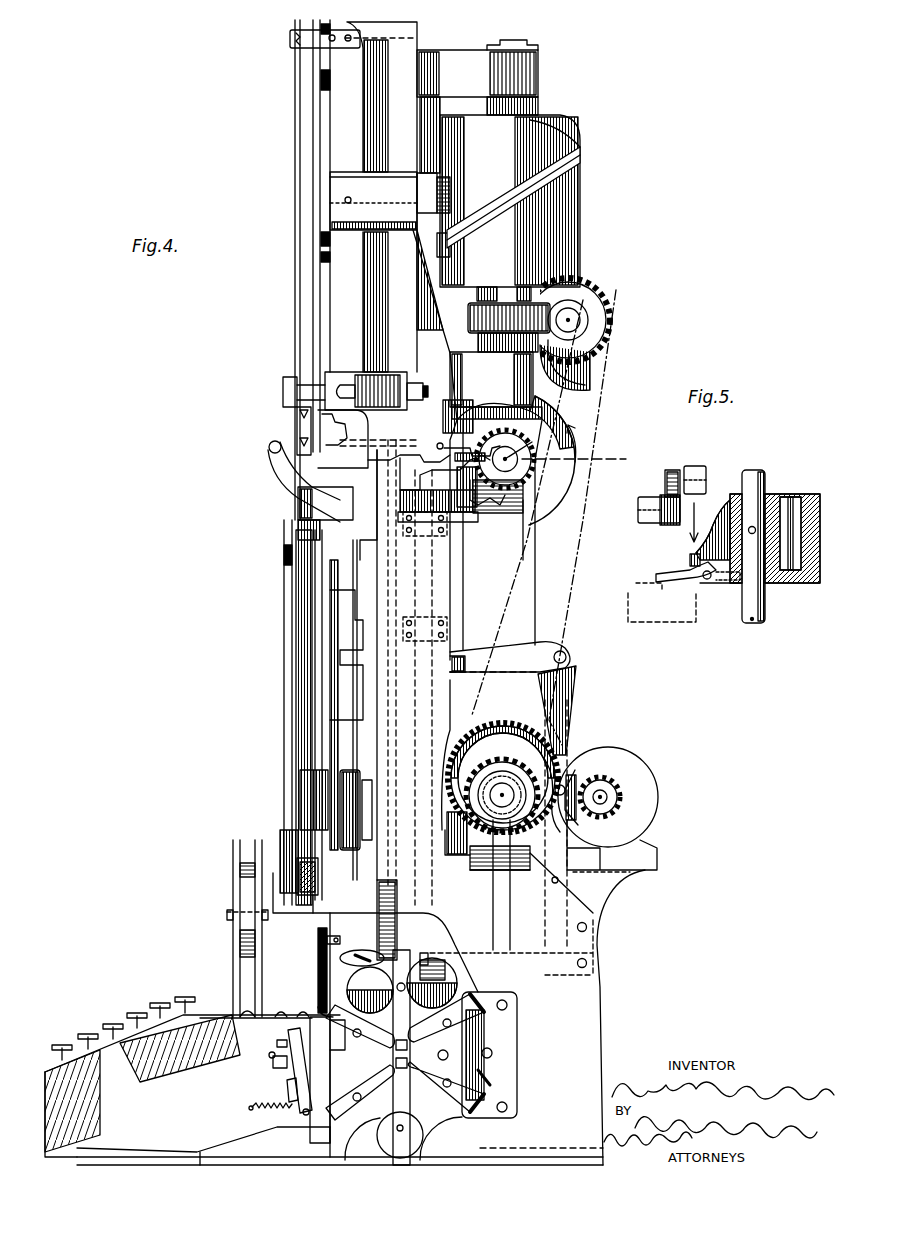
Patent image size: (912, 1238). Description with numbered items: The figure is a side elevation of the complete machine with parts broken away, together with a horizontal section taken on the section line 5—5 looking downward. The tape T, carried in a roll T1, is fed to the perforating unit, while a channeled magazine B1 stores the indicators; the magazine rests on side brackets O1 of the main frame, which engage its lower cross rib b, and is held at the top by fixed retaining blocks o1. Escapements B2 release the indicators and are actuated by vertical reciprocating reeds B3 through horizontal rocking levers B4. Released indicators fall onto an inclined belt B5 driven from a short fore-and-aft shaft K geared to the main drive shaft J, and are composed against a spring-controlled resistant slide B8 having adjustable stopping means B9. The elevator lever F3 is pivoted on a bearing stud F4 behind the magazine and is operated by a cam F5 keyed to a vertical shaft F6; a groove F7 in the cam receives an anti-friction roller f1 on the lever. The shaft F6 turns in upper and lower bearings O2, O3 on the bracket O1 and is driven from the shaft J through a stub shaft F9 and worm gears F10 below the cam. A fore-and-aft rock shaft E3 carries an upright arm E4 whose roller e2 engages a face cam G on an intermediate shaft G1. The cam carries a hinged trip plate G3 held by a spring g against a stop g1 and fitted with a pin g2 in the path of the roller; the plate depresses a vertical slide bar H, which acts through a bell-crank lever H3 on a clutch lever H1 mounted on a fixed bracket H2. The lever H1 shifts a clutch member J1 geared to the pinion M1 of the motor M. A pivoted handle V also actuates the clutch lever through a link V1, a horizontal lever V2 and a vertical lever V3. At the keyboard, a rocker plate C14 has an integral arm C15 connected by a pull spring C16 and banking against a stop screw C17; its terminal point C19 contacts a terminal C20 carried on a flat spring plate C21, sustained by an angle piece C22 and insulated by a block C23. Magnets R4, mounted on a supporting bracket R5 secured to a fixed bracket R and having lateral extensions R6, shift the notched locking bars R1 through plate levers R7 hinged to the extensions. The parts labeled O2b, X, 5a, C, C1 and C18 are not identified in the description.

In FIG. 4, the channeled magazine B1 is at (297, 268).
In FIG. 4, the fixed retaining blocks o1 is at (292, 36).
In FIG. 4, the side brackets O1 is at (412, 48).
In FIG. 4, the long lever F3 is at (418, 240).
In FIG. 4, the bearing stud F4 is at (448, 200).
In FIG. 4, the anti-friction roller f1 is at (449, 250).
In FIG. 4, the upper bearing O2 is at (477, 73).
In FIG. 4, the frame block lower O2b is at (284, 388).
In FIG. 4, the vertical shaft F6 is at (522, 45).
In FIG. 4, the cam F5 is at (510, 208).
In FIG. 4, the groove F7 is at (498, 220).
In FIG. 4, the worm gears F10 is at (468, 316).
In FIG. 4, the stub shaft F9 is at (592, 305).
In FIG. 4, the lower bearing O3 is at (496, 385).
In FIG. 4, the lower cross rib b is at (322, 383).
In FIG. 4, the latch X is at (296, 425).
In FIG. 4, the horizontal rocking levers B4 is at (362, 455).
In FIG. 4, the escapements B2 is at (322, 455).
In FIG. 4, the section line 5a is at (409, 464).
In FIG. 4, the section line 5— 5 is at (581, 464).
In FIG. 4, the vertical slide bar H is at (410, 490).
In FIG. 5, the vertical slide bar H is at (660, 575).
In FIG. 4, the spring g is at (440, 448).
In FIG. 5, the spring g is at (708, 583).
In FIG. 4, the face cam G is at (548, 420).
In FIG. 5, the face cam G is at (798, 584).
In FIG. 4, the intermediate shaft G1 is at (560, 440).
In FIG. 5, the intermediate shaft G1 is at (768, 490).
In FIG. 4, the hinged trip plate G3 is at (475, 505).
In FIG. 5, the hinged trip plate G3 is at (668, 584).
In FIG. 4, the intermediate bell-crank lever H3 is at (452, 660).
In FIG. 4, the main drive shaft J is at (505, 790).
In FIG. 4, the clutch member J1 is at (562, 765).
In FIG. 4, the motor M is at (640, 775).
In FIG. 4, the clutch lever H1 is at (585, 780).
In FIG. 4, the pinion M1 is at (620, 797).
In FIG. 4, the fixed bracket H2 is at (585, 852).
In FIG. 4, the inclined belt B5 is at (297, 690).
In FIG. 4, the vertical reciprocating reeds B3 is at (392, 760).
In FIG. 4, the short fore-and-aft shaft K is at (345, 800).
In FIG. 4, the roll T1 is at (233, 857).
In FIG. 4, the tape T is at (243, 880).
In FIG. 4, the spring-controlled resistant slide B8 is at (316, 872).
In FIG. 4, the adjustable stopping means B9 is at (303, 892).
In FIG. 4, the pivoted handle V is at (378, 955).
In FIG. 4, the link V1 is at (425, 965).
In FIG. 4, the flat spring metal plate C21 is at (360, 970).
In FIG. 4, the intermediate plate levers R7 is at (492, 1000).
In FIG. 4, the supporting bracket R5 is at (440, 975).
In FIG. 4, the fixed bracket R is at (508, 1032).
In FIG. 4, the lateral extensions R6 is at (482, 1082).
In FIG. 4, the main notched locking bars R1 is at (441, 1138).
In FIG. 4, the magnets R4 is at (378, 1125).
In FIG. 4, the vertical lever V3 is at (545, 880).
In FIG. 4, the horizontal lever V2 is at (572, 950).
In FIG. 4, the keyboard plate C is at (192, 1086).
In FIG. 4, the keys C1 is at (132, 1015).
In FIG. 4, the rocker plate C14 is at (300, 1118).
In FIG. 4, the integral arm C15 is at (278, 1043).
In FIG. 4, the terminal point C19 is at (270, 1057).
In FIG. 4, the block C18 is at (278, 1068).
In FIG. 4, the adjustable stop screw C17 is at (275, 1068).
In FIG. 4, the pull spring C16 is at (252, 1104).
In FIG. 4, the terminal C20 is at (325, 1045).
In FIG. 4, the angle piece C22 is at (316, 968).
In FIG. 4, the insulation block C23 is at (320, 940).
In FIG. 5, the stop g1 is at (705, 545).
In FIG. 5, the fore-and-aft rock shaft E3 is at (638, 513).
In FIG. 5, the upright arm E4 is at (676, 480).
In FIG. 5, the roller e2 is at (700, 476).
In FIG. 5, the pin or stud g2 is at (700, 552).